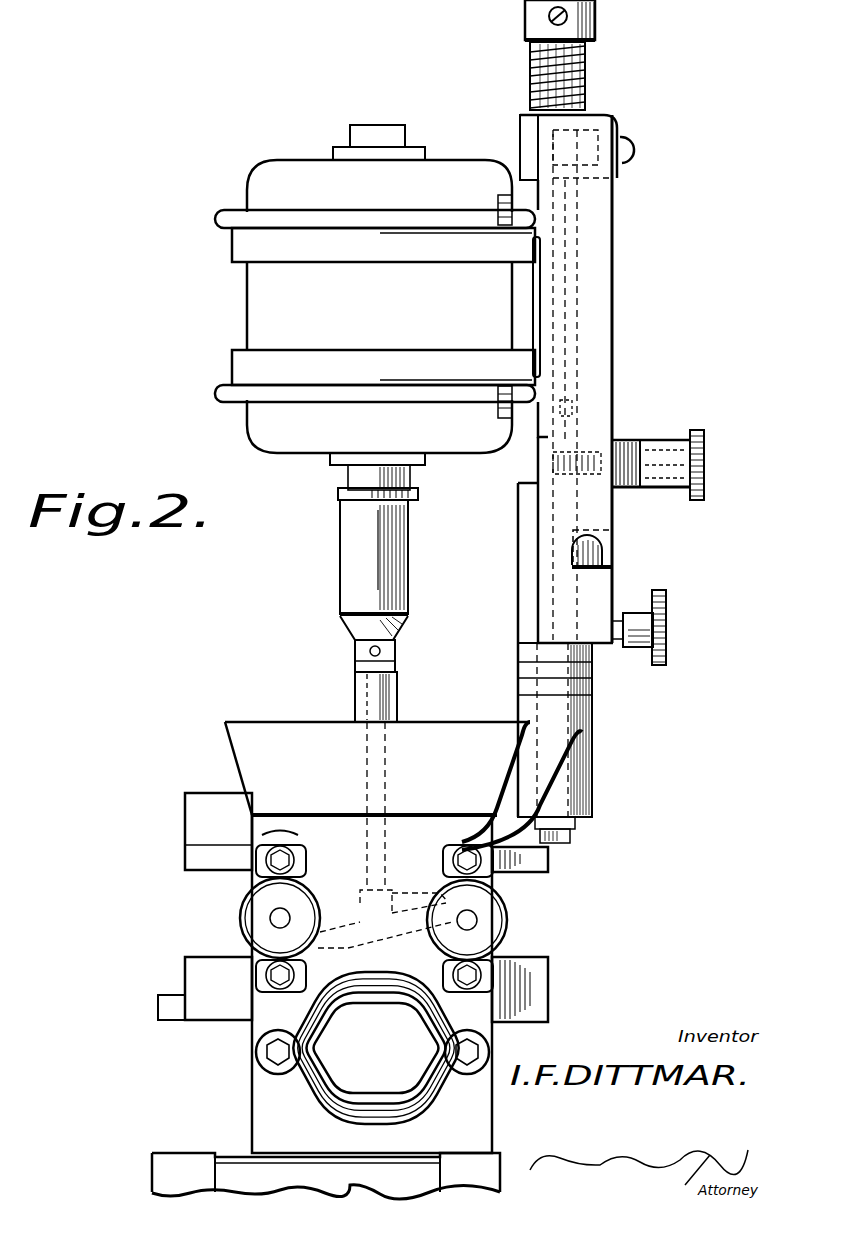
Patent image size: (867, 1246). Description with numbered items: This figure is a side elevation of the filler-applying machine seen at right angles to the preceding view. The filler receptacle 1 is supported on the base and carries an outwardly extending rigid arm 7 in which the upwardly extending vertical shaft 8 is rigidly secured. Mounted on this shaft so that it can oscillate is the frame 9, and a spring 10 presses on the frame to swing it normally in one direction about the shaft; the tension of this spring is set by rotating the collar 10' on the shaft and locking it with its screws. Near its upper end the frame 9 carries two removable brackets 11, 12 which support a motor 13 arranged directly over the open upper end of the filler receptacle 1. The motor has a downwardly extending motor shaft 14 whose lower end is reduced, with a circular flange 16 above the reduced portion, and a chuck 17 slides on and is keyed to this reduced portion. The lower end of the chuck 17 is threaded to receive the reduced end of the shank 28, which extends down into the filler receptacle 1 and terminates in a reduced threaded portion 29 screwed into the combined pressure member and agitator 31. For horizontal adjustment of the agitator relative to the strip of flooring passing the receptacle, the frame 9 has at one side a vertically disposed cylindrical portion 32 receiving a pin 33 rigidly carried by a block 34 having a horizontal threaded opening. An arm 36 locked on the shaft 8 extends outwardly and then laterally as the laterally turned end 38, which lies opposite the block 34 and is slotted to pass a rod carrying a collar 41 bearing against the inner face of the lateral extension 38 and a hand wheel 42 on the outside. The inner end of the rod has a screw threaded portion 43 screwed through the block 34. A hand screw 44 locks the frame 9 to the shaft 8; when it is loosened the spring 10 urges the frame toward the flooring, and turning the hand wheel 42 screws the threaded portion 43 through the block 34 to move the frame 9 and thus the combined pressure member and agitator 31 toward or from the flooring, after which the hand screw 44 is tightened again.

The filler receptacle 1 is at (350, 960).
The rigid arm 7 is at (582, 760).
The shaft 8 is at (560, 232).
The frame 9 is at (592, 277).
The spring 10 is at (592, 74).
The collar 10' is at (534, 20).
The removable bracket 11 is at (246, 245).
The removable bracket 12 is at (256, 372).
The motor 13 is at (379, 289).
The motor shaft 14 is at (406, 478).
The circular flange 16 is at (412, 498).
The chuck 17 is at (398, 560).
The shank 28 is at (395, 647).
The reduced threaded portion 29 is at (385, 702).
The combined pressure member and agitator 31 is at (386, 928).
The cylindrical portion 32 is at (606, 556).
The pin 33 is at (596, 575).
The block 34 is at (618, 432).
The arm 36 is at (620, 485).
The laterally turned end 38 is at (655, 487).
The collar 41 is at (660, 440).
The hand wheel 42 is at (704, 453).
The screw threaded portion 43 is at (628, 445).
The hand screw 44 is at (655, 610).